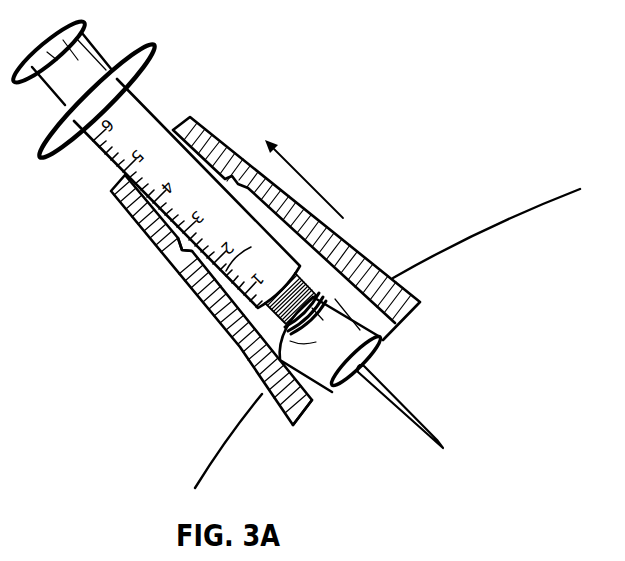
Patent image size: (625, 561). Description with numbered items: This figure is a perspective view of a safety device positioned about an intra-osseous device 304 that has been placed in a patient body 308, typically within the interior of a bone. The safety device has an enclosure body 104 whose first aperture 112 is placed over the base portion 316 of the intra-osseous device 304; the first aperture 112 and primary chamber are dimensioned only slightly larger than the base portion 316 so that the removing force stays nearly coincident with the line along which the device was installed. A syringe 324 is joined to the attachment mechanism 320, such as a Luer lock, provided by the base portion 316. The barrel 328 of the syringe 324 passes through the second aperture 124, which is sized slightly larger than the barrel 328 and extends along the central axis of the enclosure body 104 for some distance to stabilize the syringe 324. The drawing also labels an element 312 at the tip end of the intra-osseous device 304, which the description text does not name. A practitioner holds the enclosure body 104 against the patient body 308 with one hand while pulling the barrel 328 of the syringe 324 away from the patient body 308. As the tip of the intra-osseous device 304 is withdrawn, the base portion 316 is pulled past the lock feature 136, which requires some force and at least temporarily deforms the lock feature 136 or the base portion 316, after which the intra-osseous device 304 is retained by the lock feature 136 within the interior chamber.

The enclosure body 104 is at (177, 300).
The first aperture 112 is at (376, 375).
The second aperture 124 is at (173, 128).
The lock feature 136 is at (180, 252).
The intra-osseous device 304 is at (347, 380).
The patient body 308 is at (493, 246).
The needle 312 is at (438, 443).
The base portion 316 is at (262, 380).
The attachment mechanism 320 is at (353, 252).
The syringe 324 is at (142, 87).
The barrel 328 is at (193, 298).